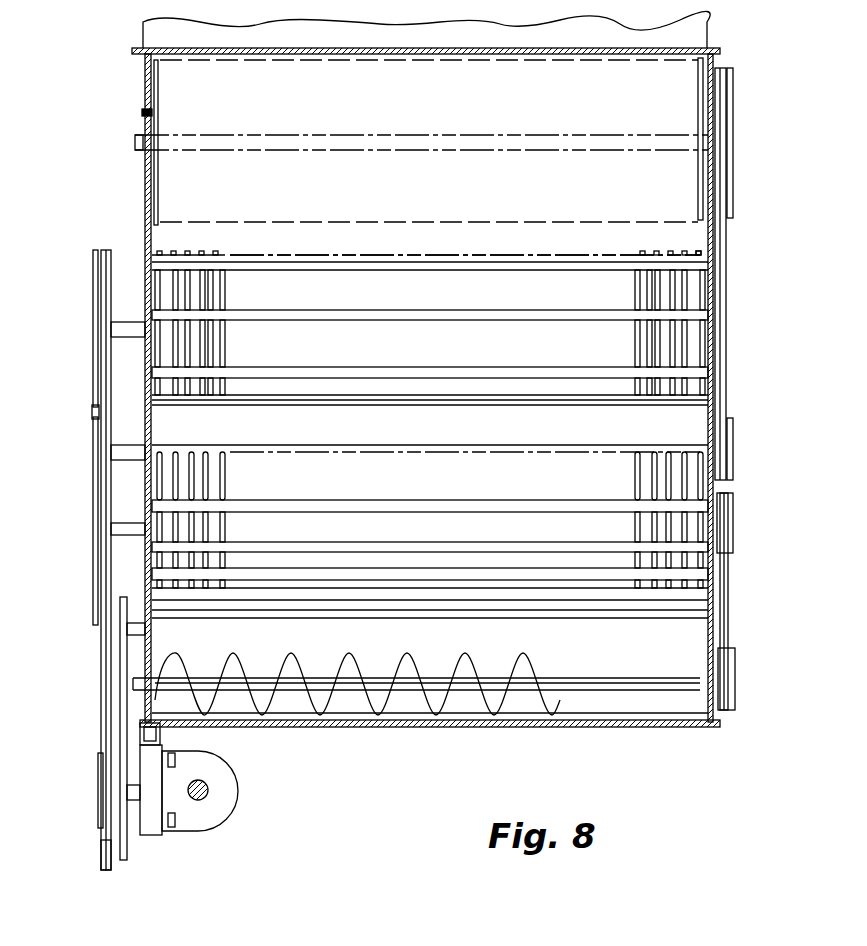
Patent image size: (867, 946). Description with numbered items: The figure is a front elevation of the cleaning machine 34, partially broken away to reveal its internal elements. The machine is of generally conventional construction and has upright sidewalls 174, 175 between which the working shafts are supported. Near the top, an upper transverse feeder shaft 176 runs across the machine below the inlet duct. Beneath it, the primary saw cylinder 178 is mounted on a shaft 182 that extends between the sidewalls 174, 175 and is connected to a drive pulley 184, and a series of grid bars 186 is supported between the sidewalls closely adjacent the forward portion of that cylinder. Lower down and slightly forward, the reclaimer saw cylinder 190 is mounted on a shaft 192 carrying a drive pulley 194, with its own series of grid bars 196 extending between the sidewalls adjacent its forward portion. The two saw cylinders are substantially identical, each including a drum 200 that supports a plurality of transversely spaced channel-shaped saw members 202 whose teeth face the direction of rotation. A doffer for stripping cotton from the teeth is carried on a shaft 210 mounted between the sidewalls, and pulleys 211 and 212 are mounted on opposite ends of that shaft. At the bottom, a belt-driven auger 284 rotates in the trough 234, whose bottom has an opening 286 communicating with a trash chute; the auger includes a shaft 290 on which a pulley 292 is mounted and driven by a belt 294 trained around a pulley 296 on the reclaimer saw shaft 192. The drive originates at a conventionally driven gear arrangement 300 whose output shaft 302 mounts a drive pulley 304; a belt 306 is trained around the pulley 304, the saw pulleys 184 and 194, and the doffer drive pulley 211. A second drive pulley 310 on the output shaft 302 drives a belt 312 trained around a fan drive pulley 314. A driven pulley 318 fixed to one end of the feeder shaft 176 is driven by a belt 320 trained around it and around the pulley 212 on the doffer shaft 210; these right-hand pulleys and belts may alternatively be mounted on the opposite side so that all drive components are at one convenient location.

The cleaning machine 34 is at (106, 170).
The upright sidewall 174 is at (148, 74).
The upright sidewall 175 is at (712, 62).
The upper transverse feeder shaft 176 is at (142, 112).
The primary saw cylinder 178 is at (400, 250).
The shaft 182 is at (104, 322).
The drive pulley 184 is at (95, 262).
The grid bars 186 is at (568, 365).
The reclaimer saw cylinder 190 is at (400, 447).
The shaft 192 is at (112, 528).
The drive pulley 194 is at (96, 578).
The grid bars 196 is at (528, 580).
The drum 200 is at (695, 262).
The channel-shaped saw members 202 is at (680, 290).
The doffer shaft 210 is at (114, 450).
The doffer drive pulley 211 is at (95, 412).
The pulley 212 is at (733, 430).
The trough 234 is at (400, 727).
The belt-driven auger 284 is at (335, 680).
The opening 286 is at (598, 727).
The auger shaft 290 is at (252, 688).
The pulley 292 is at (735, 662).
The belt 294 is at (729, 607).
The pulley 296 is at (734, 522).
The gear arrangement 300 is at (238, 786).
The output shaft 302 is at (130, 830).
The drive pulley 304 is at (100, 800).
The belt 306 is at (140, 738).
The second drive pulley 310 is at (105, 860).
The belt 312 is at (120, 690).
The fan drive pulley 314 is at (128, 628).
The driven pulley 318 is at (727, 102).
The belt 320 is at (733, 236).